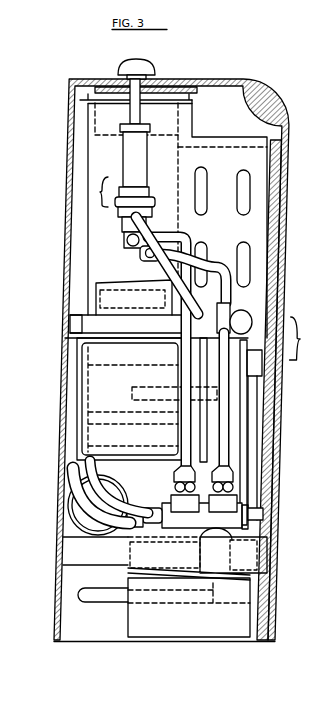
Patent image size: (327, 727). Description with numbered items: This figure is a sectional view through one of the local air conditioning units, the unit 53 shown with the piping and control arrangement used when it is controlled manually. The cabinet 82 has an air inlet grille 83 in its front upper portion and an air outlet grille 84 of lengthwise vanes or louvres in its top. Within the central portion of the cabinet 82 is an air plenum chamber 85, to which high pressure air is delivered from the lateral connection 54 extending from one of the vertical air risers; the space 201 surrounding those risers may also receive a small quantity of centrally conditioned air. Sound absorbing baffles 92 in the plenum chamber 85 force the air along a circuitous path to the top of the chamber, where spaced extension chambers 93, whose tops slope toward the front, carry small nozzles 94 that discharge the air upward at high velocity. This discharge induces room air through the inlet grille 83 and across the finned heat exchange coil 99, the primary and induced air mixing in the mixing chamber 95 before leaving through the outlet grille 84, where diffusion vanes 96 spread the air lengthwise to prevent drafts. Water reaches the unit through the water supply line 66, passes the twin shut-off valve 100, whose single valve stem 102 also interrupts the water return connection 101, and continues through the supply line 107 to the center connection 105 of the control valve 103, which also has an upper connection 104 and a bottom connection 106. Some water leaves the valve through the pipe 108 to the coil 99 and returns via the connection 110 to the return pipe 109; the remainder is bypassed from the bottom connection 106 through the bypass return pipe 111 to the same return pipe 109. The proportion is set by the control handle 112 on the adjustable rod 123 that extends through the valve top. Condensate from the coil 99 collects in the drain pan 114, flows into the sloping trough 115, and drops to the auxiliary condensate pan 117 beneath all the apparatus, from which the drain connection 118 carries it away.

The unit 53 is at (302, 338).
The lateral connection 54 is at (70, 502).
The water supply line 66 is at (82, 463).
The cabinet 82 is at (276, 397).
The air inlet grille 83 is at (272, 167).
The air outlet grille 84 is at (104, 87).
The air plenum chamber 85 is at (78, 384).
The sound absorbing baffles 92 is at (110, 370).
The extension chambers 93 is at (107, 306).
The nozzles 94 is at (98, 288).
The mixing chamber 95 is at (95, 169).
The diffusion vanes 96 is at (93, 135).
The coil 99 is at (250, 192).
The shut-off valve 100 is at (227, 512).
The water return connection 101 is at (78, 487).
The valve stem 102 is at (263, 515).
The control valve 103 is at (100, 193).
The upper connection 104 is at (127, 220).
The center connection 105 is at (125, 238).
The bottom connection 106 is at (140, 256).
The water supply line 107 is at (186, 358).
The pipe 108 is at (170, 272).
The return pipe 109 is at (222, 373).
The connection 110 is at (270, 316).
The bypass return pipe 111 is at (201, 260).
The control handle 112 is at (156, 70).
The drain pan 114 is at (75, 327).
The trough 115 is at (260, 366).
The auxiliary condensate pan 117 is at (85, 548).
The drain connection 118 is at (200, 596).
The adjustable rod 123 is at (140, 115).
The space 201 is at (242, 424).